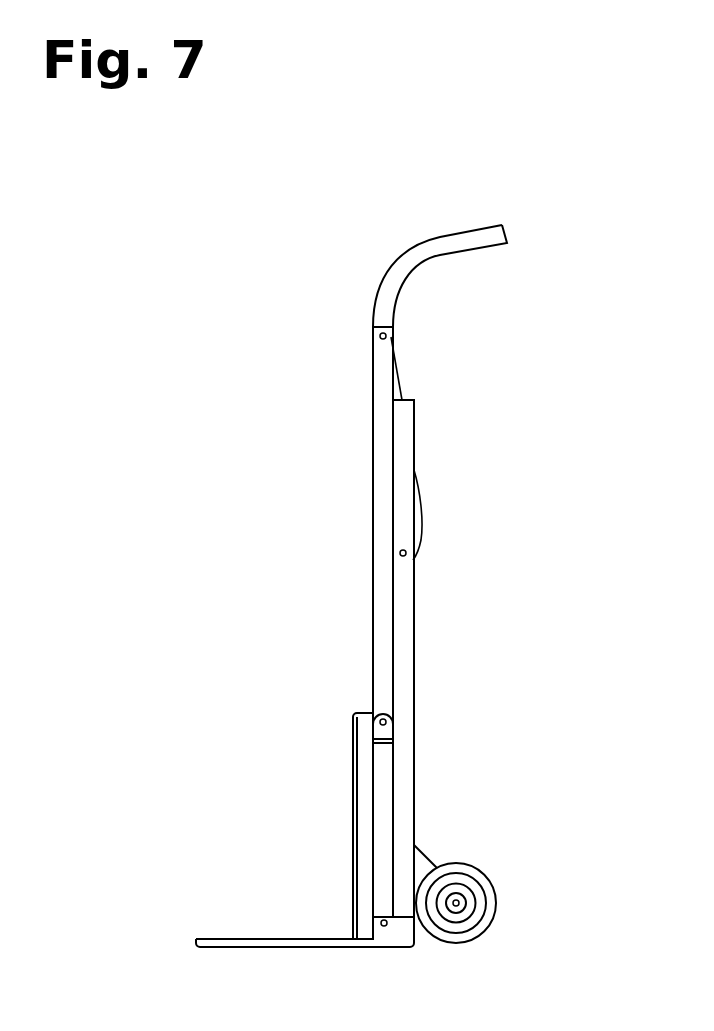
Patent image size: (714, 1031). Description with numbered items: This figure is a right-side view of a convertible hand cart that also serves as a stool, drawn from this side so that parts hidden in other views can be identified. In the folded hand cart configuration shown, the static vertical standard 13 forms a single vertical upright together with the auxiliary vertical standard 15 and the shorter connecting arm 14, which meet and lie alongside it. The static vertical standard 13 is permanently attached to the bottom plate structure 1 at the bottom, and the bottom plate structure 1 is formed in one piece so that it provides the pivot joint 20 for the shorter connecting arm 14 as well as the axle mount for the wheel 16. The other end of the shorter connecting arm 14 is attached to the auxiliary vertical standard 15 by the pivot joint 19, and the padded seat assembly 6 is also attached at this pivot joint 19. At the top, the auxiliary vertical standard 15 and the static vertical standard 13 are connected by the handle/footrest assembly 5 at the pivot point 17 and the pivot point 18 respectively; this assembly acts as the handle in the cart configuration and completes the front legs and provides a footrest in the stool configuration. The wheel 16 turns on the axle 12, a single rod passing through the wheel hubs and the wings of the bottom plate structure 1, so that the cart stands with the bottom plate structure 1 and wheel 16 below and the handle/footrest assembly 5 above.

The bottom plate structure 1 is at (254, 939).
The handle/footrest assembly 5 is at (400, 273).
The padded seat assembly 6 is at (365, 817).
The axle 12 is at (465, 905).
The static vertical standard 13 is at (405, 627).
The shorter connecting arm 14 is at (384, 781).
The auxiliary vertical standard 15 is at (384, 587).
The wheel 16 is at (463, 870).
The pivot point 17 is at (390, 336).
The pivot point 18 is at (410, 553).
The pivot joint 19 is at (390, 720).
The pivot joint 20 is at (378, 920).